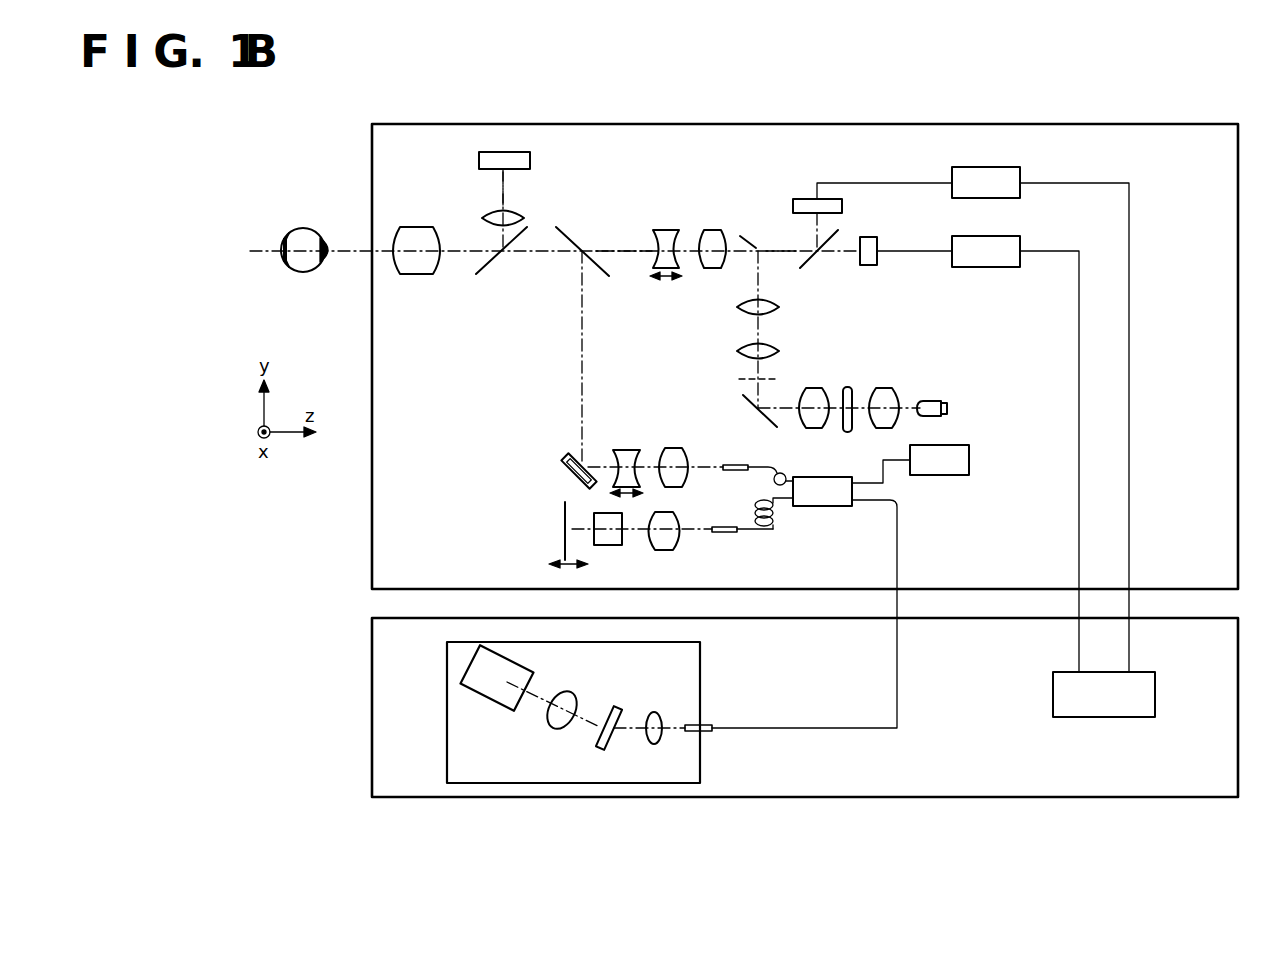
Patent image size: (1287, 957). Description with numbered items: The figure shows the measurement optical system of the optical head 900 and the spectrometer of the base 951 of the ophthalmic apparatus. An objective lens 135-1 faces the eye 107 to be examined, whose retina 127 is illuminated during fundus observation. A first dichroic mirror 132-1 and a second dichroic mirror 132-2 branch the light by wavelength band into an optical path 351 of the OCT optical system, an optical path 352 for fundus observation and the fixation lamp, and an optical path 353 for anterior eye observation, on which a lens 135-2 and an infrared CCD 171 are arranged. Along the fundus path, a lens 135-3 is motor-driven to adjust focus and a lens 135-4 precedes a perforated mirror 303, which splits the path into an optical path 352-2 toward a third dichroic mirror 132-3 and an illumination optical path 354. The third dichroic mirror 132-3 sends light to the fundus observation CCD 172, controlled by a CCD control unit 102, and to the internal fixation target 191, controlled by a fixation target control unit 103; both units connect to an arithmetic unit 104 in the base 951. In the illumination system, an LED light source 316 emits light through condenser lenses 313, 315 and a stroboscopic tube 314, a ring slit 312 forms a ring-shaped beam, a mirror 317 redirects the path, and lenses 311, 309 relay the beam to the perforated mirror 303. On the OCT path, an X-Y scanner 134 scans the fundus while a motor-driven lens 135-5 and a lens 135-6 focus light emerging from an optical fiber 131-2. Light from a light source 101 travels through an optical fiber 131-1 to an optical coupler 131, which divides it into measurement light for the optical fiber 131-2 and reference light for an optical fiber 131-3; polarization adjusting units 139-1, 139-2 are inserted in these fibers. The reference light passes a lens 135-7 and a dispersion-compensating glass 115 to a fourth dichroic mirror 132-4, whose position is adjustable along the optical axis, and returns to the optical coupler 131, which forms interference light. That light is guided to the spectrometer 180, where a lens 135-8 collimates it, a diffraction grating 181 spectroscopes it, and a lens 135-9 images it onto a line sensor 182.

The optical head 900 is at (372, 150).
The base 951 is at (372, 633).
The eye to be examined 107 is at (303, 264).
The retina 127 is at (283, 244).
The objective lens 135-1 is at (408, 276).
The lens 135-2 is at (481, 218).
The lens 135-3 is at (664, 230).
The lens 135-4 is at (711, 230).
The lens 135-5 is at (620, 450).
The lens 135-6 is at (672, 448).
The lens 135-7 is at (664, 550).
The lens 135-8 is at (654, 745).
The lens 135-9 is at (553, 720).
The first dichroic mirror 132-1 is at (488, 261).
The second dichroic mirror 132-2 is at (566, 237).
The third dichroic mirror 132-3 is at (836, 234).
The fourth dichroic mirror 132-4 is at (565, 508).
The infrared CCD 171 is at (478, 160).
The fundus observation CCD 172 is at (814, 198).
The optical path for anterior eye observation 353 is at (510, 194).
The optical path for fundus observation and fixation lamp 352 is at (608, 260).
The optical path 352-2 is at (781, 248).
The optical path of the OCT optical system 351 is at (581, 372).
The optical path 354 is at (756, 283).
The perforated mirror 303 is at (762, 256).
The lens 309 is at (779, 307).
The lens 311 is at (737, 352).
The ring slit 312 is at (742, 380).
The mirror 317 is at (750, 408).
The condenser lens 313 is at (814, 388).
The stroboscopic tube 314 is at (848, 387).
The condenser lens 315 is at (892, 394).
The LED light source 316 is at (946, 408).
The internal fixation target 191 is at (878, 264).
The CCD control unit 102 is at (1020, 167).
The fixation target control unit 103 is at (1016, 232).
The arithmetic unit 104 is at (1155, 686).
The light source 101 is at (969, 460).
The optical coupler 131 is at (850, 506).
The optical fiber 131-1 is at (886, 483).
The optical fiber 131-2 is at (756, 467).
The optical fiber 131-3 is at (780, 501).
The polarization adjusting unit 139-1 is at (788, 474).
The polarization adjusting unit 139-2 is at (756, 515).
The X-Y scanner 134 is at (564, 464).
The dispersion-compensating glass 115 is at (612, 546).
The spectrometer 180 is at (700, 660).
The diffraction grating 181 is at (616, 710).
The line sensor 182 is at (523, 664).